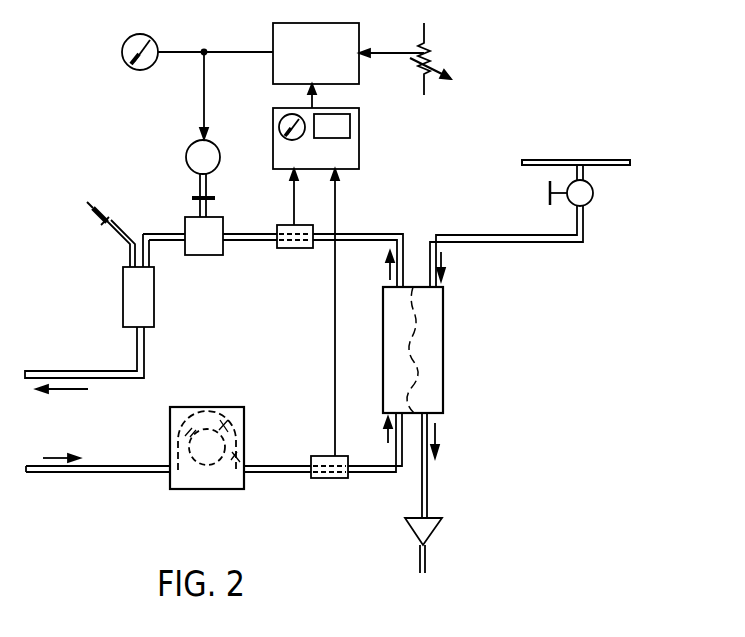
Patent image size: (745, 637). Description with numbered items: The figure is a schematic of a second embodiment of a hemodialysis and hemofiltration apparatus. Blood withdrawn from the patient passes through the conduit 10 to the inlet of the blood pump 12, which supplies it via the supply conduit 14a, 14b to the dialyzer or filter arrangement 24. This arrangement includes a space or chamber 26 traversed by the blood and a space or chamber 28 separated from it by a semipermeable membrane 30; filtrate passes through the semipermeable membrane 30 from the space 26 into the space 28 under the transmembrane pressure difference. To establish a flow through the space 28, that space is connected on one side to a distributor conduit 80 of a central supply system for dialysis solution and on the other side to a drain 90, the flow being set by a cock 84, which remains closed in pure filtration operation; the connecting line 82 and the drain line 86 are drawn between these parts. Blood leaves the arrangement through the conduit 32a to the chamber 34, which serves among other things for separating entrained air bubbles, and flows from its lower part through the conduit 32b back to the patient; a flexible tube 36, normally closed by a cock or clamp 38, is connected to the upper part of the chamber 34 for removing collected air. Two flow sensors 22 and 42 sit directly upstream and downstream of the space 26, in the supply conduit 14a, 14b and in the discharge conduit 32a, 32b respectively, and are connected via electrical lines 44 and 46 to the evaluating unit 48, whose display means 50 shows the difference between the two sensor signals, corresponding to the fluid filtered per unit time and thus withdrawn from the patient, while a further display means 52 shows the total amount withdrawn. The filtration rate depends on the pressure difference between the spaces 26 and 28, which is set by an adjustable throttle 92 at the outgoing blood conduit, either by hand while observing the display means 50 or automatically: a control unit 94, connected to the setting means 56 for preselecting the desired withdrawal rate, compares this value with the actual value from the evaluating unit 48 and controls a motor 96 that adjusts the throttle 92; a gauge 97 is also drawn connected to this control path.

The conduit 10 is at (115, 465).
The blood pump 12 is at (226, 407).
The conduit 14a is at (277, 466).
The conduit 14b is at (372, 476).
The flow sensor 22 is at (328, 479).
The dialyzer or filter arrangement 24 is at (383, 307).
The space or chamber 26 is at (393, 347).
The space or chamber 28 is at (433, 353).
The semipermeable membrane 30 is at (428, 323).
The conduit 32a is at (368, 233).
The conduit 32b is at (146, 364).
The chamber 34 is at (149, 312).
The flexible tube 36 is at (121, 245).
The cock or clamp 38 is at (112, 226).
The flow sensor 42 is at (290, 249).
The electrical line 44 is at (294, 200).
The electrical line 46 is at (334, 328).
The evaluating unit 48 is at (352, 156).
The display means 50 is at (280, 125).
The display means 52 is at (345, 127).
The setting means 56 is at (432, 50).
The distributor conduit 80 is at (620, 147).
The supply line 82 is at (545, 243).
The cock 84 is at (575, 203).
The drain line 86 is at (430, 479).
The drain 90 is at (436, 536).
The adjustable throttle 92 is at (213, 227).
The control unit 94 is at (330, 69).
The motor 96 is at (186, 152).
The gauge 97 is at (138, 70).